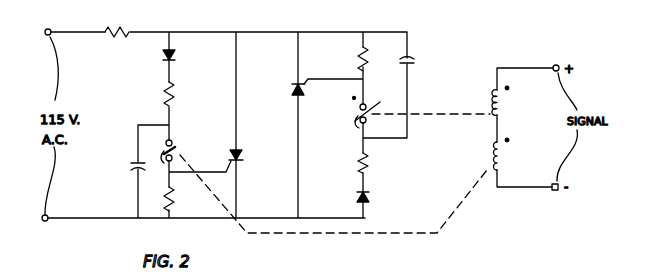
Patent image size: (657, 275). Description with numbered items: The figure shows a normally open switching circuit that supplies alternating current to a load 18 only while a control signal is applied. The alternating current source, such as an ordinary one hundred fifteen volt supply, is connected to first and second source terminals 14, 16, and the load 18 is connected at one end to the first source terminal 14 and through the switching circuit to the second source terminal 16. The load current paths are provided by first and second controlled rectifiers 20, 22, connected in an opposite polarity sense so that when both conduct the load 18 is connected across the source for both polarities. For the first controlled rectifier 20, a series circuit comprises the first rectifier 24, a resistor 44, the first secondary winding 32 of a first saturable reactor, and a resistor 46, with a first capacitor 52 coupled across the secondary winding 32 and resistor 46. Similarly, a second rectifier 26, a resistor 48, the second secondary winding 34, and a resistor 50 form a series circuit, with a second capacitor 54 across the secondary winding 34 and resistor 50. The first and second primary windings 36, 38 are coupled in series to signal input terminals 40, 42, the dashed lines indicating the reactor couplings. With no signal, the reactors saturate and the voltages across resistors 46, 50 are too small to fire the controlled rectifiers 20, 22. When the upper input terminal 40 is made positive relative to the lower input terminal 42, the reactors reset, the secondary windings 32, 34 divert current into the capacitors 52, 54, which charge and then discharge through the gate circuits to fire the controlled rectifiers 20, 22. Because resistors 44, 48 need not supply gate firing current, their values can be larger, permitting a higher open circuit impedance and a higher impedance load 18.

The first source terminal 14 is at (49, 29).
The second source terminal 16 is at (43, 222).
The load 18 is at (133, 24).
The first controlled rectifier 20 is at (243, 156).
The second controlled rectifier 22 is at (292, 88).
The first rectifier 24 is at (178, 58).
The second rectifier 26 is at (357, 193).
The first secondary winding 32 is at (174, 147).
The second secondary winding 34 is at (358, 112).
The first primary winding 36 is at (503, 153).
The second primary winding 38 is at (503, 105).
The upper signal input terminal 40 is at (557, 64).
The lower signal input terminal 42 is at (556, 192).
The resistor 44 is at (165, 90).
The resistor 46 is at (174, 204).
The resistor 48 is at (358, 160).
The resistor 50 is at (358, 56).
The first capacitor 52 is at (125, 162).
The second capacitor 54 is at (412, 60).